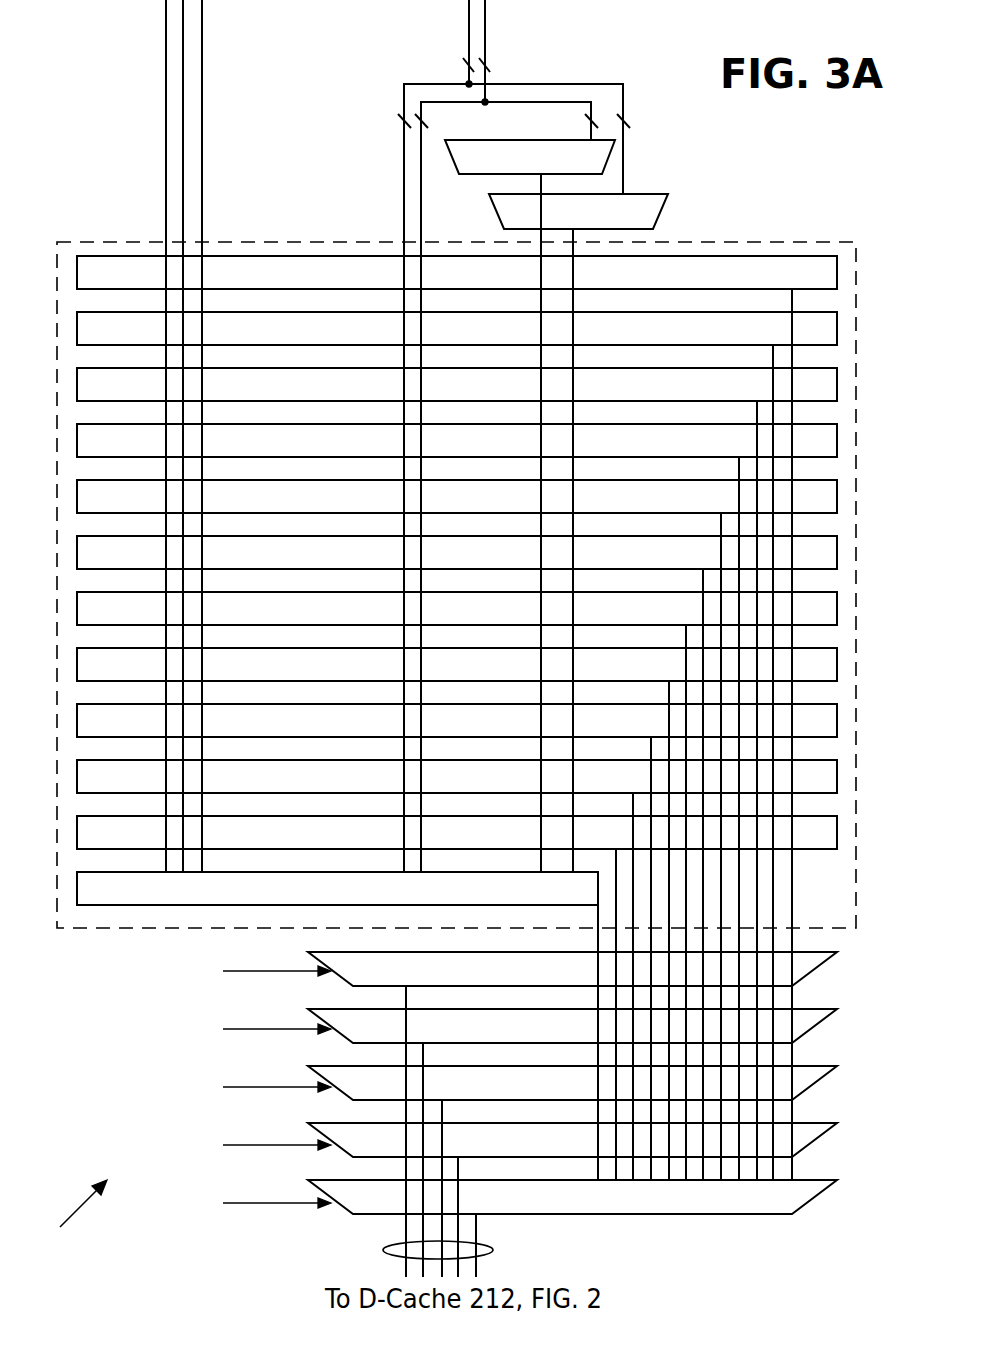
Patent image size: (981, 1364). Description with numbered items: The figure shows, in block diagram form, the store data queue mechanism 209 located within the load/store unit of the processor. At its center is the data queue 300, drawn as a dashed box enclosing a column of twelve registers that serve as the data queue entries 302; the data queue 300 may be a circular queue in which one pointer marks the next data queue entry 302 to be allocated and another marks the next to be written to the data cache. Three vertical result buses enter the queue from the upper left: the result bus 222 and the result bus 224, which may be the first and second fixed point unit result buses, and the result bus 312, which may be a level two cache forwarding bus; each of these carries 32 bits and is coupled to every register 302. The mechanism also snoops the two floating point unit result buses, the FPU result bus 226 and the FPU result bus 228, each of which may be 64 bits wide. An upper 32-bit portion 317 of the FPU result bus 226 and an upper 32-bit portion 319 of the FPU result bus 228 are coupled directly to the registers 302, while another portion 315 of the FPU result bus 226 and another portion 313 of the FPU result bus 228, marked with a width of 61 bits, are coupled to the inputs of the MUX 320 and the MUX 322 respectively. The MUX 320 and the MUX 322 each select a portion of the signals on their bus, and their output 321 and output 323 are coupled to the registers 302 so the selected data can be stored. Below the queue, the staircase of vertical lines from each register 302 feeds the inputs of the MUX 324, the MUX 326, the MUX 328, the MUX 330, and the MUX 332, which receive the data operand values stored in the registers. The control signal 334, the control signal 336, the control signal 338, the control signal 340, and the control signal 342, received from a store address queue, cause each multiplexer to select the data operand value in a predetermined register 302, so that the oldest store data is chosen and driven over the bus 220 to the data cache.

The 32-bit bus width 32 is at (416, 128).
The 61-bit portion width 61 is at (609, 128).
The 64-bit bus width 64 is at (476, 68).
The store data queue mechanism 209 is at (74, 1222).
The bus 220 is at (482, 1249).
The result bus 222 is at (166, 213).
The result bus 224 is at (183, 145).
The FPU result bus 226 is at (465, 33).
The FPU result bus 228 is at (488, 33).
The data queue 300 is at (823, 237).
The data queue entry 302 is at (465, 285).
The result bus 312 is at (203, 145).
The portion of result bus 313 is at (591, 84).
The portion of result bus 315 is at (550, 100).
The upper 32-bit portion 317 is at (402, 240).
The upper 32-bit portion 319 is at (423, 240).
The MUX 320 is at (519, 170).
The output 321 is at (543, 187).
The MUX 322 is at (549, 225).
The output 323 is at (575, 249).
The MUX 324 is at (465, 983).
The MUX 326 is at (465, 1040).
The MUX 328 is at (465, 1097).
The MUX 330 is at (465, 1154).
The MUX 332 is at (465, 1211).
The control signal 334 is at (254, 971).
The control signal 336 is at (254, 1029).
The control signal 338 is at (254, 1087).
The control signal 340 is at (254, 1145).
The control signal 342 is at (254, 1203).